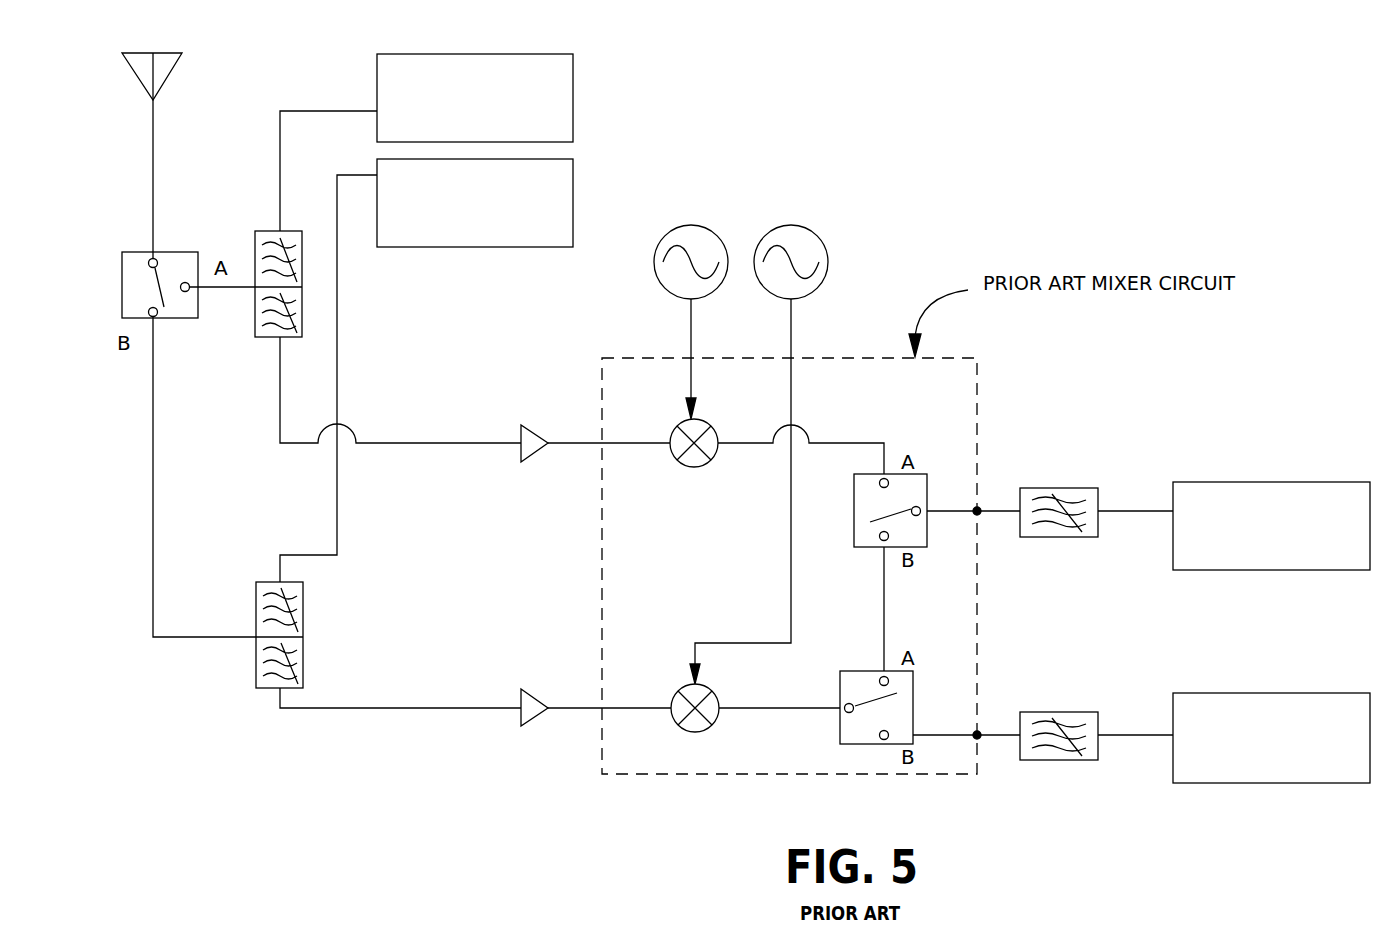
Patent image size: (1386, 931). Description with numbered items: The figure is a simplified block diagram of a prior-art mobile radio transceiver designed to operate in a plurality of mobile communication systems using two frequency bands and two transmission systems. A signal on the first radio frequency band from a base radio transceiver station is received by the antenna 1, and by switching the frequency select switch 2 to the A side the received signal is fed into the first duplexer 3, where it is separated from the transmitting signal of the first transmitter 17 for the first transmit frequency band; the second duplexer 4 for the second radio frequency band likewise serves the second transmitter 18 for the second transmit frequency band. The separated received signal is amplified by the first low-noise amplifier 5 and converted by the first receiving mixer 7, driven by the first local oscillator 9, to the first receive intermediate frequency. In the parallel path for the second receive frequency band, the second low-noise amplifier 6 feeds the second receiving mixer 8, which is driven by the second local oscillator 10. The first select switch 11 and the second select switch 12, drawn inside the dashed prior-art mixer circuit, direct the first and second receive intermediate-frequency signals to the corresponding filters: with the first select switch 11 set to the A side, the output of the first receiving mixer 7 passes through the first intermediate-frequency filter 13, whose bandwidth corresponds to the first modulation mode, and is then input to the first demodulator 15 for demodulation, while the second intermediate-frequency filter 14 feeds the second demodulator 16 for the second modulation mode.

The antenna 1 is at (167, 53).
The frequency select switch 2 is at (122, 262).
The first duplexer 3 is at (255, 240).
The second duplexer 4 is at (256, 603).
The first low-noise amplifier 5 is at (542, 428).
The second low-noise amplifier 6 is at (541, 700).
The first receiving mixer 7 is at (670, 437).
The second receiving mixer 8 is at (672, 693).
The first local oscillator 9 is at (681, 225).
The second local oscillator 10 is at (767, 228).
The first select switch 11 is at (854, 510).
The second select switch 12 is at (840, 685).
The first intermediate-frequency filter 13 is at (1033, 488).
The second intermediate-frequency filter 14 is at (1087, 712).
The first demodulator 15 is at (1218, 482).
The second demodulator 16 is at (1225, 693).
The first transmitter 17 is at (377, 100).
The second transmitter 18 is at (377, 171).